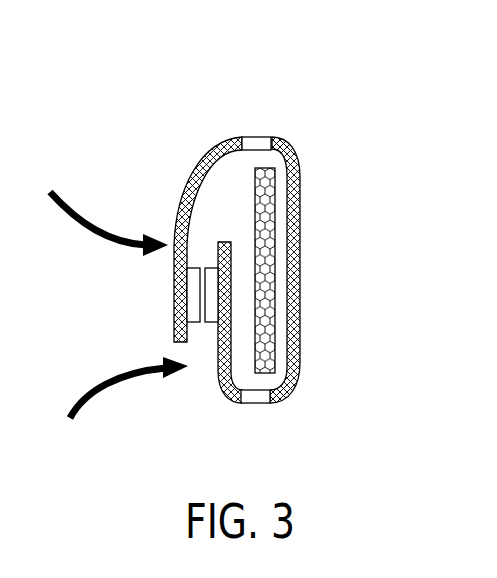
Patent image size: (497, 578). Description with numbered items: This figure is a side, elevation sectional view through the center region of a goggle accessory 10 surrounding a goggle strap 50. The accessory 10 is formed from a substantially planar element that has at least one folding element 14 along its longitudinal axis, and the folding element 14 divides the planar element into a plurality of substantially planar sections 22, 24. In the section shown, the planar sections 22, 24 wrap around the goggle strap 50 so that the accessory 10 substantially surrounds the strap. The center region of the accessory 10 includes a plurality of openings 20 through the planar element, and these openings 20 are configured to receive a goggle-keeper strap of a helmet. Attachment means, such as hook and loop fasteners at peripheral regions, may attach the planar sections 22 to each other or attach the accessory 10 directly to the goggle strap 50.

The goggle accessory 10 is at (209, 252).
The folding element 14 is at (273, 137).
The openings 20 is at (257, 137).
The substantially planar section 22 is at (198, 176).
The substantially planar section 24 is at (296, 292).
The goggle strap 50 is at (275, 222).